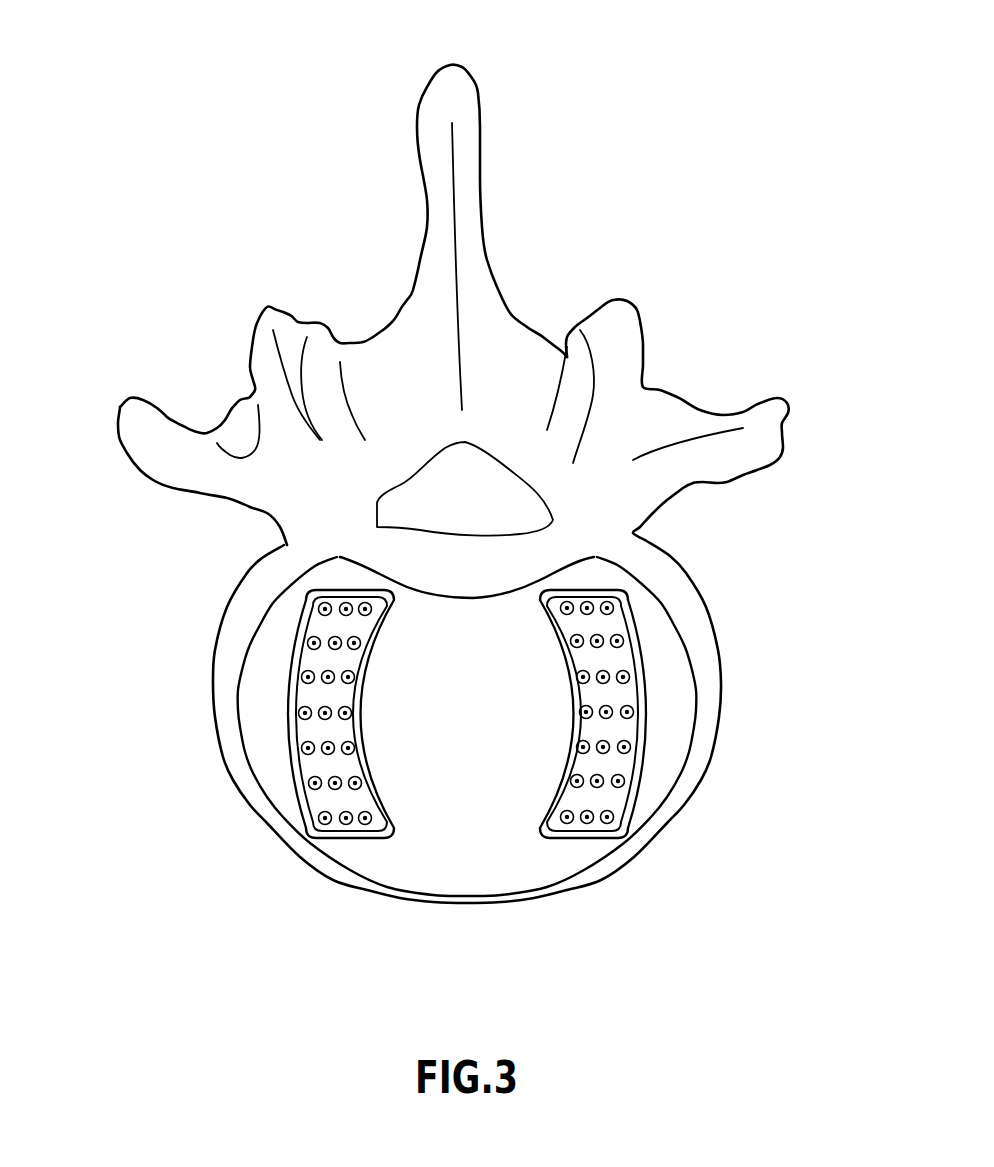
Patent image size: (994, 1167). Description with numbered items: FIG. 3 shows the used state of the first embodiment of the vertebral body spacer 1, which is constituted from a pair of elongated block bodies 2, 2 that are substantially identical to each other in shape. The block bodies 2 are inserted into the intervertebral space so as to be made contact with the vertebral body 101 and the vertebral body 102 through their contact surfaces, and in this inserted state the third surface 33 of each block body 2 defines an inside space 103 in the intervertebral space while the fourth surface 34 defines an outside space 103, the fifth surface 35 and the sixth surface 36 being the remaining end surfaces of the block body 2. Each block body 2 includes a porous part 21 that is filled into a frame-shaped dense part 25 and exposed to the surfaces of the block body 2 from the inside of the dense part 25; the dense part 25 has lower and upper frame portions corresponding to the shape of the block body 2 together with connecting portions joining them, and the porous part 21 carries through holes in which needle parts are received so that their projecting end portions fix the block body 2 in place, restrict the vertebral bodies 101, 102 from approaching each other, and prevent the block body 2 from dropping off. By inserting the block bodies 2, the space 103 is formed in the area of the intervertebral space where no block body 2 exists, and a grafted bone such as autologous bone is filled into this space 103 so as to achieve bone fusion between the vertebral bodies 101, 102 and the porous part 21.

The vertebral body spacer 1 is at (466, 730).
The block body 2 is at (466, 730).
The porous part 21 is at (335, 803).
The dense part 25 is at (300, 793).
The third surface 33 is at (362, 712).
The fourth surface 34 is at (290, 711).
The fifth surface 35 is at (333, 560).
The sixth surface 36 is at (358, 838).
The vertebral body 101 is at (426, 484).
The vertebral body 102 is at (232, 645).
The space 103 is at (355, 584).